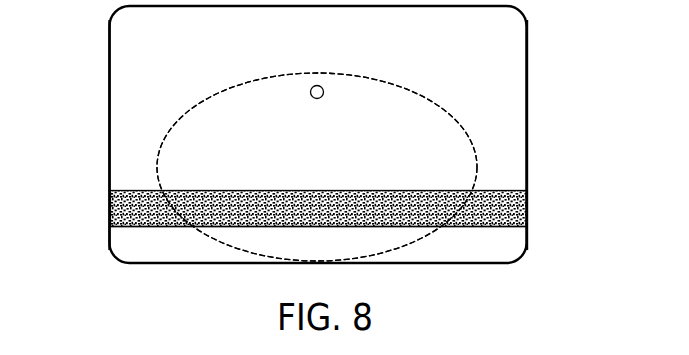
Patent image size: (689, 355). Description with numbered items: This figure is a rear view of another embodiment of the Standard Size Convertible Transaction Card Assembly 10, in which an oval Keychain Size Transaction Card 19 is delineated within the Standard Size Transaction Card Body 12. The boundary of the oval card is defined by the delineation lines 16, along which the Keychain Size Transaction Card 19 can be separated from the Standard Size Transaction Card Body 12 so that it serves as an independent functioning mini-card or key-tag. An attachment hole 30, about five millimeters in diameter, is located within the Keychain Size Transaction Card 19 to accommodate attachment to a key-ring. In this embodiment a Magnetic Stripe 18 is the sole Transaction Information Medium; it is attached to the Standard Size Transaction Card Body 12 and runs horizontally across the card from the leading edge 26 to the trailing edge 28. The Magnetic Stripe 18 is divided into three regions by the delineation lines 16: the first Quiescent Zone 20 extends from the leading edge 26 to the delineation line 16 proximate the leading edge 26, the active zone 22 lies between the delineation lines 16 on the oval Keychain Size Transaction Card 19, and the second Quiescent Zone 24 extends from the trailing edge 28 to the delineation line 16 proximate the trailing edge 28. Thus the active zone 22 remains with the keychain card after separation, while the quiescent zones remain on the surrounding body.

The golf ball 10 is at (594, 8).
The Standard Size Transaction Card Body 12 is at (510, 53).
The delineation lines 16 is at (215, 93).
The Magnetic Stripe 18 is at (527, 195).
The Keychain Size Transaction Card 19 is at (455, 152).
The first Quiescent Zone 20 is at (135, 227).
The active zone 22 is at (322, 227).
The second Quiescent Zone 24 is at (495, 227).
The leading edge 26 is at (110, 117).
The trailing edge 28 is at (527, 82).
The attachment hole 30 is at (320, 85).